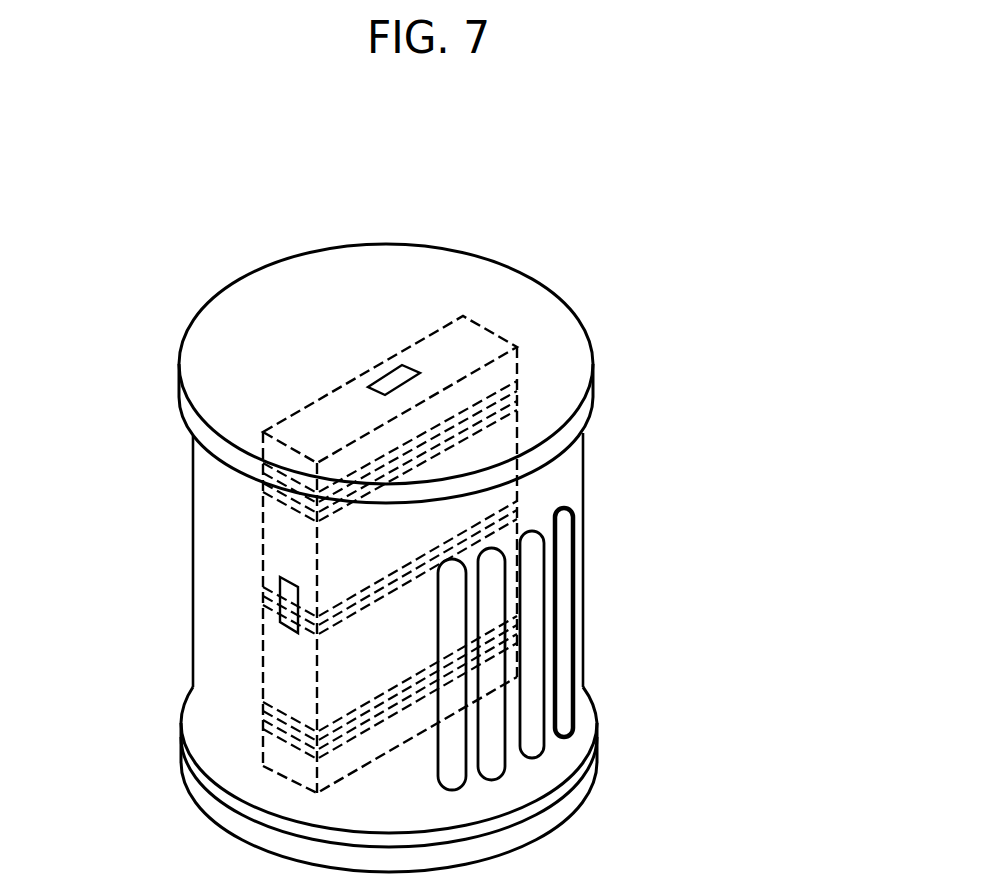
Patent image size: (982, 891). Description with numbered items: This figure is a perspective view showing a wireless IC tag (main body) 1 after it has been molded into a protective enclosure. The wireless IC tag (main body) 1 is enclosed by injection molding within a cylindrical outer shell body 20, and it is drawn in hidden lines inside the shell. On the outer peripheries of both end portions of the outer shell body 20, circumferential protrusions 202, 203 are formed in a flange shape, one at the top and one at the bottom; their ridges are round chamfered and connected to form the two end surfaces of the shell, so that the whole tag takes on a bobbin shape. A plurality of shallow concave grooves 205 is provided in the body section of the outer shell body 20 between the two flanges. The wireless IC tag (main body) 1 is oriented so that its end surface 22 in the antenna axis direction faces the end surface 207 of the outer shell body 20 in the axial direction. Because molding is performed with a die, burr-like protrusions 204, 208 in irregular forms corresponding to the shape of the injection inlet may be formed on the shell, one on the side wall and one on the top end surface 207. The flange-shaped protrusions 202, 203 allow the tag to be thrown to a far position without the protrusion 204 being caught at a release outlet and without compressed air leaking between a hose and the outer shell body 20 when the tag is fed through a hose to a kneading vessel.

The wireless IC tag (main body) 1 is at (462, 345).
The cylindrical outer shell body 20 is at (722, 265).
The end surface 22 is at (318, 424).
The circumferential protrusion 202 is at (590, 413).
The circumferential protrusion 203 is at (587, 760).
The burr-like protrusion 204 is at (287, 595).
The shallow concave groove 205 is at (533, 570).
The end surface 207 is at (370, 262).
The burr-like protrusion 208 is at (402, 370).